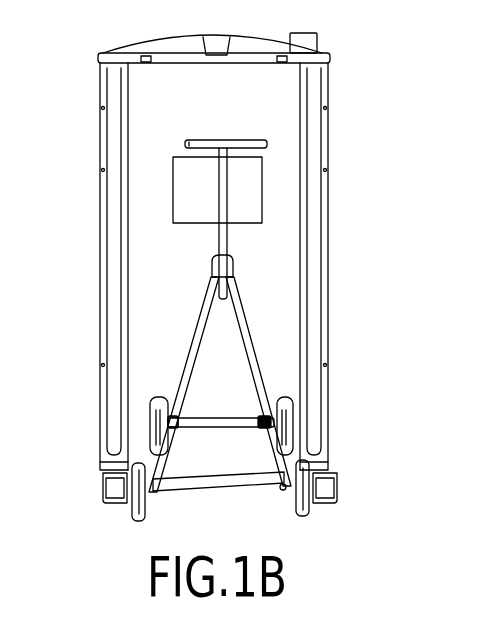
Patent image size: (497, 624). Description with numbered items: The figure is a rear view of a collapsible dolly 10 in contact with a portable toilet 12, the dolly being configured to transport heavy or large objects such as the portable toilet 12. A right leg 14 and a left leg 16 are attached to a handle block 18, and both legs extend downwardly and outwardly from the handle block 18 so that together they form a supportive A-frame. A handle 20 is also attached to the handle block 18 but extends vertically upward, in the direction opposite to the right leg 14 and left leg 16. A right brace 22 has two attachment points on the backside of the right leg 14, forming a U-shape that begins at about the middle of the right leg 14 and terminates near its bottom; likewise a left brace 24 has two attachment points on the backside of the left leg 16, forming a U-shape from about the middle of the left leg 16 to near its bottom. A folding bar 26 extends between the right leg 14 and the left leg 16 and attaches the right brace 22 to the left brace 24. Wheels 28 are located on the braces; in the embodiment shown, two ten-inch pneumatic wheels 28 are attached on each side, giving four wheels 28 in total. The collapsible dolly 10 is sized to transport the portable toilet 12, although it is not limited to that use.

The collapsible dolly 10 is at (290, 222).
The portable toilet 12 is at (229, 110).
The right leg 14 is at (255, 357).
The left leg 16 is at (194, 333).
The handle block 18 is at (235, 266).
The handle 20 is at (218, 197).
The right brace 22 is at (320, 458).
The left brace 24 is at (125, 470).
The folding bar 26 is at (197, 420).
The wheels 28 is at (153, 400).